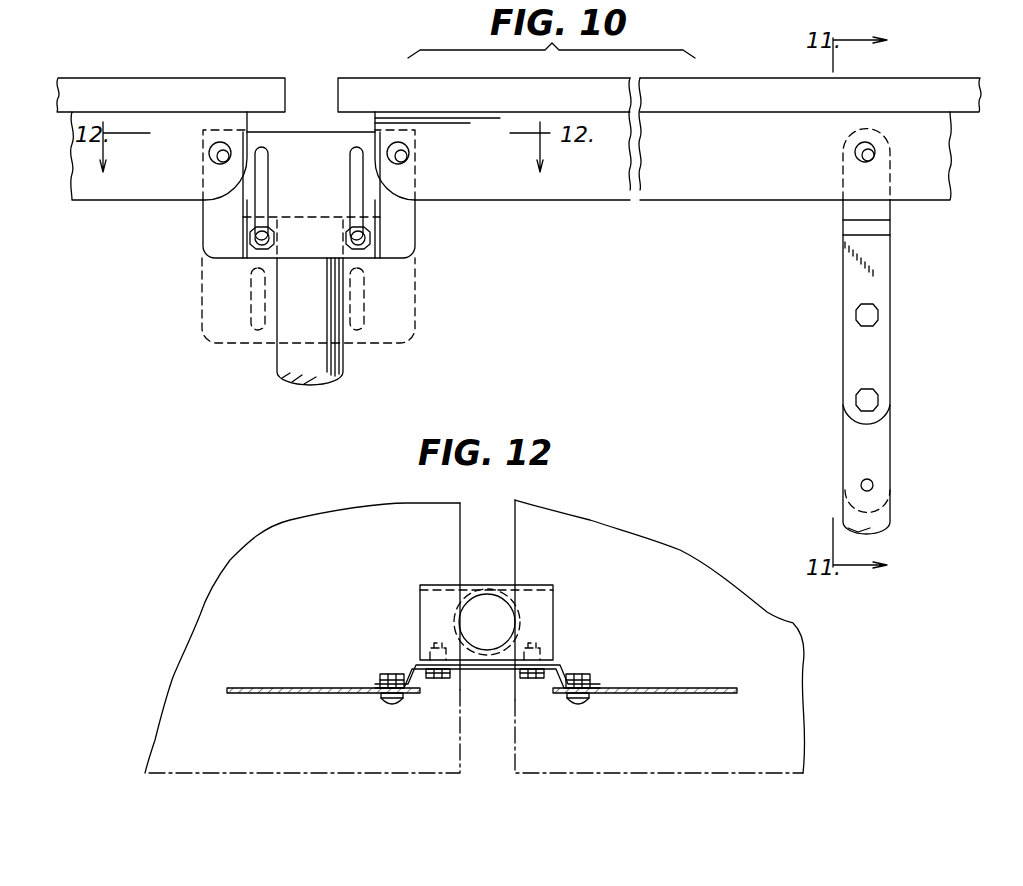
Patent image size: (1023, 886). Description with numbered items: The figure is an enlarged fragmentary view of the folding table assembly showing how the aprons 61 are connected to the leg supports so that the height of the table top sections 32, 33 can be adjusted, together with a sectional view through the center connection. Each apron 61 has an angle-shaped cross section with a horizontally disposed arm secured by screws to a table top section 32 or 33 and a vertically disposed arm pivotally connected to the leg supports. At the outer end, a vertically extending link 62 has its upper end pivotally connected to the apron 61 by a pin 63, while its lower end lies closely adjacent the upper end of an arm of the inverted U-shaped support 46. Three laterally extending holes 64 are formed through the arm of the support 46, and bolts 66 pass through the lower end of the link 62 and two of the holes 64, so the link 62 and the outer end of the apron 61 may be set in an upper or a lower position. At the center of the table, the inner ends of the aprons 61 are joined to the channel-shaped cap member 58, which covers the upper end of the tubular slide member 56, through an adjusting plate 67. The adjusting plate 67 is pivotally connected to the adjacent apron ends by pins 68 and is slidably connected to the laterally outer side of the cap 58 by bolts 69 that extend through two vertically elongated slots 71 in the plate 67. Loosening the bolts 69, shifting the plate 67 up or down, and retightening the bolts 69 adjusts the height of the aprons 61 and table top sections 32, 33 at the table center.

In FIG. 10, the table top section 32 is at (173, 88).
In FIG. 12, the table top section 32 is at (285, 740).
In FIG. 10, the table top section 33 is at (722, 88).
In FIG. 12, the table top section 33 is at (752, 750).
In FIG. 10, the inverted U-shaped support 46 is at (885, 518).
In FIG. 10, the tubular slide member 56 is at (334, 377).
In FIG. 12, the channel-shaped cap member 58 is at (553, 618).
In FIG. 10, the apron 61 is at (128, 202).
In FIG. 12, the apron 61 is at (260, 688).
In FIG. 10, the link 62 is at (892, 262).
In FIG. 10, the pin 63 is at (877, 150).
In FIG. 10, the hole 64 is at (873, 483).
In FIG. 10, the bolt 66 is at (858, 400).
In FIG. 10, the adjusting plate 67 is at (412, 223).
In FIG. 12, the adjusting plate 67 is at (562, 666).
In FIG. 10, the pin 68 is at (209, 153).
In FIG. 12, the pin 68 is at (390, 705).
In FIG. 10, the bolt 69 is at (354, 232).
In FIG. 12, the bolt 69 is at (530, 679).
In FIG. 10, the vertically elongated slot 71 is at (352, 165).